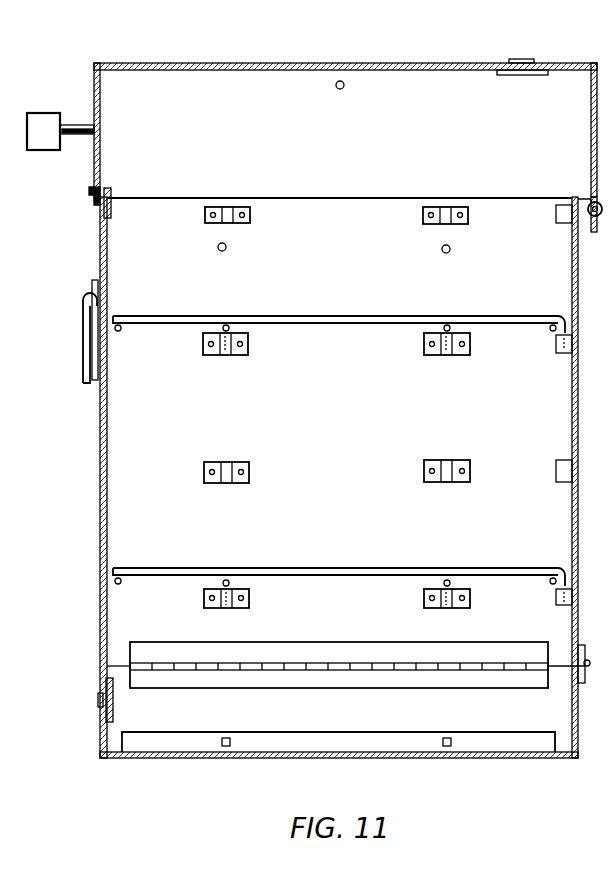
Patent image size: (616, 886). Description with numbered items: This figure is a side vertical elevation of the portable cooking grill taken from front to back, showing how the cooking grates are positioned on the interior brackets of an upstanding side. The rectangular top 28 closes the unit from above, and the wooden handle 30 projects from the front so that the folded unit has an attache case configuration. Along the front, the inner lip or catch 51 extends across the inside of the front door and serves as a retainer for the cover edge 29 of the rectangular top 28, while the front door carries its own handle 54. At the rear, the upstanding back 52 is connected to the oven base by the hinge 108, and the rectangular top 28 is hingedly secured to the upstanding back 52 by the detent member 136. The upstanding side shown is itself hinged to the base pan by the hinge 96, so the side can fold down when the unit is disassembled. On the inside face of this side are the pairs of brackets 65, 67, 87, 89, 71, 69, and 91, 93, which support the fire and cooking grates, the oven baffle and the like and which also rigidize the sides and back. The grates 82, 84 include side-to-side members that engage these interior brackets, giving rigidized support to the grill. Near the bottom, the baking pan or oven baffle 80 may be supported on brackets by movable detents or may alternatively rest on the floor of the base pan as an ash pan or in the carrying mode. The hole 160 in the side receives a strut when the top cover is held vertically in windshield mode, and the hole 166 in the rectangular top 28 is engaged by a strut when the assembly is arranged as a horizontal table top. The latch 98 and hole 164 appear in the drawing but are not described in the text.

The rectangular top 28 is at (428, 88).
The cover edge 29 is at (102, 165).
The wooden handle 30 is at (43, 122).
The inner lip or catch 51 is at (112, 194).
The upstanding back 52 is at (578, 503).
The handle 54 is at (82, 352).
The bracket 65 is at (250, 223).
The bracket 67 is at (445, 228).
The bracket 69 is at (466, 481).
The bracket 71 is at (249, 481).
The baking pan or oven baffle 80 is at (375, 733).
The grate 82 is at (320, 323).
The grate 84 is at (320, 568).
The bracket 87 is at (248, 353).
The bracket 89 is at (466, 353).
The bracket 91 is at (249, 606).
The bracket 93 is at (466, 604).
The hinge 96 is at (482, 651).
The latch 98 is at (97, 705).
The hinge 108 is at (581, 683).
The detent member 136 is at (605, 225).
The hole 160 is at (450, 252).
The hole 164 is at (226, 250).
The hole 166 is at (336, 88).